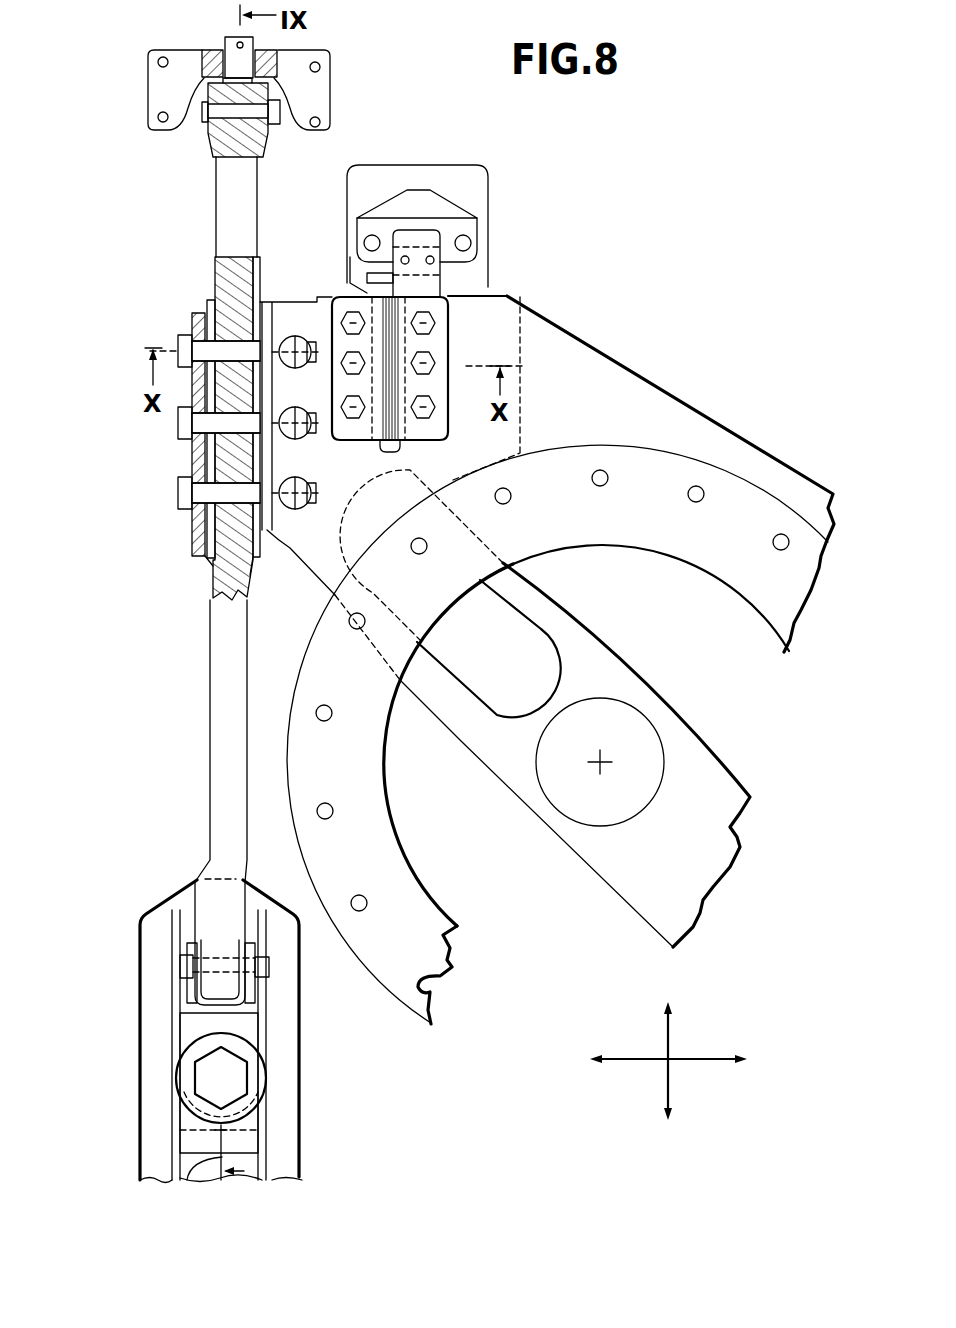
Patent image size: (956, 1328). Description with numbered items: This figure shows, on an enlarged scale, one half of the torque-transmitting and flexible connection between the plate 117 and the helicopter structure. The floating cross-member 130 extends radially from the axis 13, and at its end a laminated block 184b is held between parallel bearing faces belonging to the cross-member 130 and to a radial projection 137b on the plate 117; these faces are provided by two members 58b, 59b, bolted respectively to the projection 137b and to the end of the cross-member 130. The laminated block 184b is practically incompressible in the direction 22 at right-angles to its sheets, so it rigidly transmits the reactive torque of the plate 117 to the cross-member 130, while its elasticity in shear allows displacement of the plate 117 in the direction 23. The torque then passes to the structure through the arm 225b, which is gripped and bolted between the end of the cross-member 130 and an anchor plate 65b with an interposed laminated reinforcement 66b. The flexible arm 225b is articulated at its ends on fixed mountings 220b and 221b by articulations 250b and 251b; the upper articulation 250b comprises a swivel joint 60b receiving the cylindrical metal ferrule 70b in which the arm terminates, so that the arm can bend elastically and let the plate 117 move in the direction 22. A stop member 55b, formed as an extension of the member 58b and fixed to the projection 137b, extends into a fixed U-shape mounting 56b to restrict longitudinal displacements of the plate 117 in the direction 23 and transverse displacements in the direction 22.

The metal ferrule 70b is at (224, 56).
The swivel joint 60b is at (263, 43).
The mounting 220b is at (320, 97).
The articulation 250b is at (196, 135).
The arm 225b is at (219, 664).
The anchor plate 65b is at (192, 458).
The laminated reinforcement 66b is at (258, 574).
The floating cross-member 130 is at (293, 325).
The plate 117 is at (661, 537).
The radial projection 137b is at (574, 368).
The stop member 55b is at (447, 262).
The U-shape mounting 56b is at (352, 232).
The laminated block 184b is at (390, 310).
The member 58b is at (420, 344).
The member 59b is at (360, 430).
The axis 13 is at (598, 766).
The direction 22 is at (682, 1058).
The direction 23 is at (670, 1086).
The articulation 251b is at (310, 1051).
The mounting 221b is at (282, 1113).